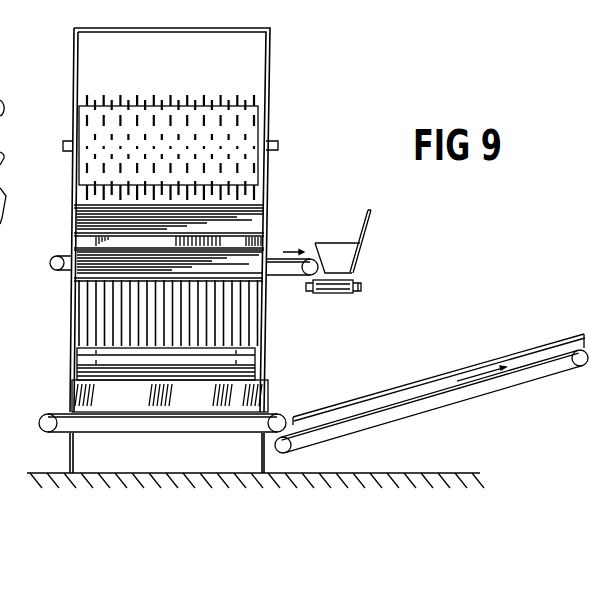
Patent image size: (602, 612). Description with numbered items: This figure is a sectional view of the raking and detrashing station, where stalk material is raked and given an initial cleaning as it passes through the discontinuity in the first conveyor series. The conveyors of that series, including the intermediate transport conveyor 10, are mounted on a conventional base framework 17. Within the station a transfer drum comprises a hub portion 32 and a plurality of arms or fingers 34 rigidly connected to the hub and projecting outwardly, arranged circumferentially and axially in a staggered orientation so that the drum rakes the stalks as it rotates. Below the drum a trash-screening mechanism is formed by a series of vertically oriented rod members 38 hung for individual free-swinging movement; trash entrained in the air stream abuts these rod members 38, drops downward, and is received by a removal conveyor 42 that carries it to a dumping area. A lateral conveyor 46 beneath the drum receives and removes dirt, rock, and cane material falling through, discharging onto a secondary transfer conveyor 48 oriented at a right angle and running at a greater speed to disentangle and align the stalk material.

The intermediate transport conveyor 10 is at (256, 374).
The base framework 17 is at (267, 33).
The hub portion 32 is at (253, 137).
The arms or fingers 34 is at (256, 98).
The rod members 38 is at (253, 313).
The removal conveyor 42 is at (53, 412).
The lateral conveyor 46 is at (273, 256).
The secondary transfer conveyor 48 is at (351, 295).